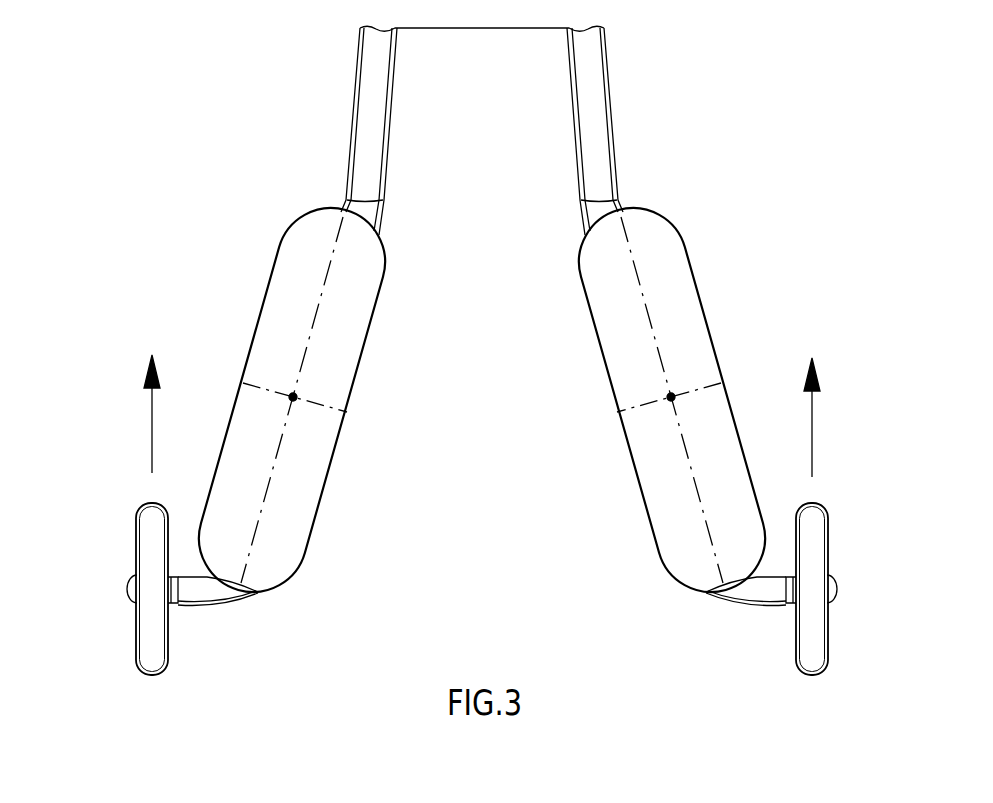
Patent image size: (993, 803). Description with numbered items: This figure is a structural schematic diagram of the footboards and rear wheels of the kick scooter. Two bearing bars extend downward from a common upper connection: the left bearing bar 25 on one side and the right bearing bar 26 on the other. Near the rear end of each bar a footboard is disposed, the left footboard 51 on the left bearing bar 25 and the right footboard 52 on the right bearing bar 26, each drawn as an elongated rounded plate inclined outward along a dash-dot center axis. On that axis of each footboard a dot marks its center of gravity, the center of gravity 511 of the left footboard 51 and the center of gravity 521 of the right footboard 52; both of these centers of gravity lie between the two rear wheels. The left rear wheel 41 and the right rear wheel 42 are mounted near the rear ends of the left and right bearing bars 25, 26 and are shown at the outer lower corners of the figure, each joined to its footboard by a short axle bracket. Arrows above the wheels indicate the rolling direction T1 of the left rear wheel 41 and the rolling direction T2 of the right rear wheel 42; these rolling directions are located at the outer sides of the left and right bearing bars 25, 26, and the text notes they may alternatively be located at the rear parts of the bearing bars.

The left bearing bar 25 is at (367, 143).
The right bearing bar 26 is at (595, 130).
The left rear wheel 41 is at (148, 537).
The right rear wheel 42 is at (813, 537).
The left footboard 51 is at (288, 290).
The right footboard 52 is at (667, 270).
The center of gravity of left footboard 511 is at (296, 396).
The center of gravity of right footboard 521 is at (668, 396).
The rolling direction of left rear wheel T1 is at (155, 393).
The rolling direction of right rear wheel T2 is at (815, 396).